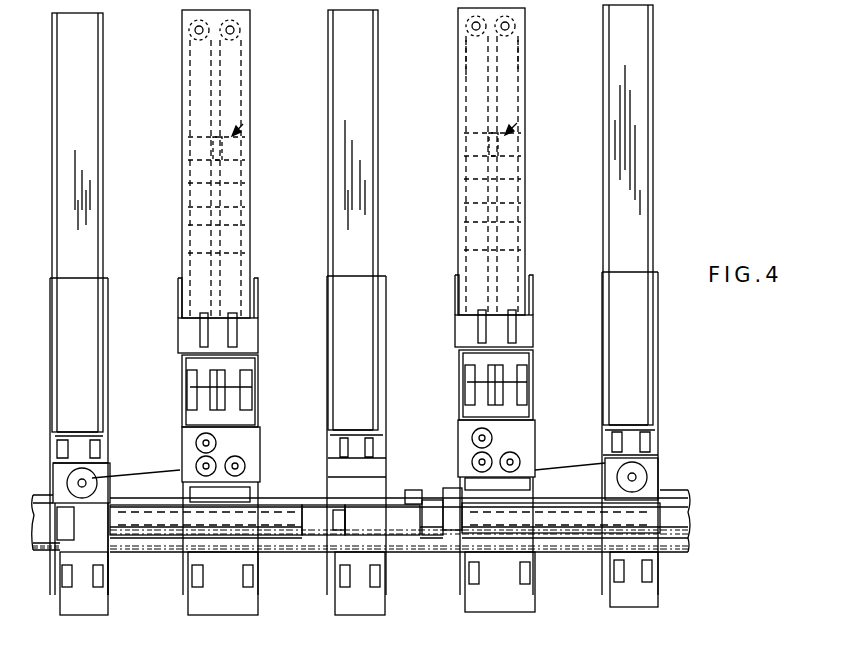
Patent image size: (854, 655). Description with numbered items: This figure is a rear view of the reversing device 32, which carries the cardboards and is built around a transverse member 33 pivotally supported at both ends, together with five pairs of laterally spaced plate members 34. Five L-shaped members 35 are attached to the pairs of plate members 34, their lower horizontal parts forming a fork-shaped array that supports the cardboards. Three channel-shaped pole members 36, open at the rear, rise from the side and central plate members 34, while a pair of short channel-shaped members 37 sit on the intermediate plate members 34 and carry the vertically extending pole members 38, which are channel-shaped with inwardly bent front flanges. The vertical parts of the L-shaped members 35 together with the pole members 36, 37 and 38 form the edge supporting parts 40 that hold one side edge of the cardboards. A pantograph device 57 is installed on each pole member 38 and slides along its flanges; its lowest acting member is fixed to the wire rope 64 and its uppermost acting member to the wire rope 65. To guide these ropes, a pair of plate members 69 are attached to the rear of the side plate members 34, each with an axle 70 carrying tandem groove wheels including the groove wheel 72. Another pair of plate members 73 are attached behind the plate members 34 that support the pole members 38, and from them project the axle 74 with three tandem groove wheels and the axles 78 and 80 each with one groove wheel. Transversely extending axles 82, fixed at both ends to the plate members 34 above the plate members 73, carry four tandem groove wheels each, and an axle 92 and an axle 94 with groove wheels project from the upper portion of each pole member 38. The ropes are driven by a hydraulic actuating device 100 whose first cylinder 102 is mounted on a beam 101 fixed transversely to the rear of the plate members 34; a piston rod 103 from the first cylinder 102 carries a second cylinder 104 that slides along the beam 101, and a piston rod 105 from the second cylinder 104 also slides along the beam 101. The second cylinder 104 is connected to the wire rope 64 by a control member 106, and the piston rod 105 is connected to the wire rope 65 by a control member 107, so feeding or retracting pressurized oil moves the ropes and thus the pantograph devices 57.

The reversing device 32 is at (668, 38).
The transverse member 33 is at (676, 490).
The plate members 34 is at (258, 293).
The L-shaped members 35 is at (60, 603).
The pole members 36 is at (103, 98).
The short channel-shaped members 37 is at (258, 377).
The pole members 38 is at (250, 256).
The edge supporting parts 40 is at (380, 135).
The pantograph devices 57 is at (254, 120).
The wire rope 64 is at (465, 76).
The wire rope 65 is at (520, 64).
The plate members 69 is at (62, 470).
The axle 70 is at (92, 482).
The groove wheel 72 is at (100, 496).
The plate members 73 is at (256, 432).
The axle 74 is at (245, 466).
The axle 78 is at (216, 462).
The axle 80 is at (223, 430).
The transversely extending axles 82 is at (232, 380).
The axle 92 is at (234, 31).
The axle 94 is at (195, 32).
The hydraulic actuating device 100 is at (176, 535).
The beam 101 is at (570, 525).
The first cylinder 102 is at (135, 530).
The piston rod 103 is at (330, 525).
The second cylinder 104 is at (400, 528).
The piston rod 105 is at (438, 530).
The control member 106 is at (413, 490).
The control member 107 is at (450, 488).